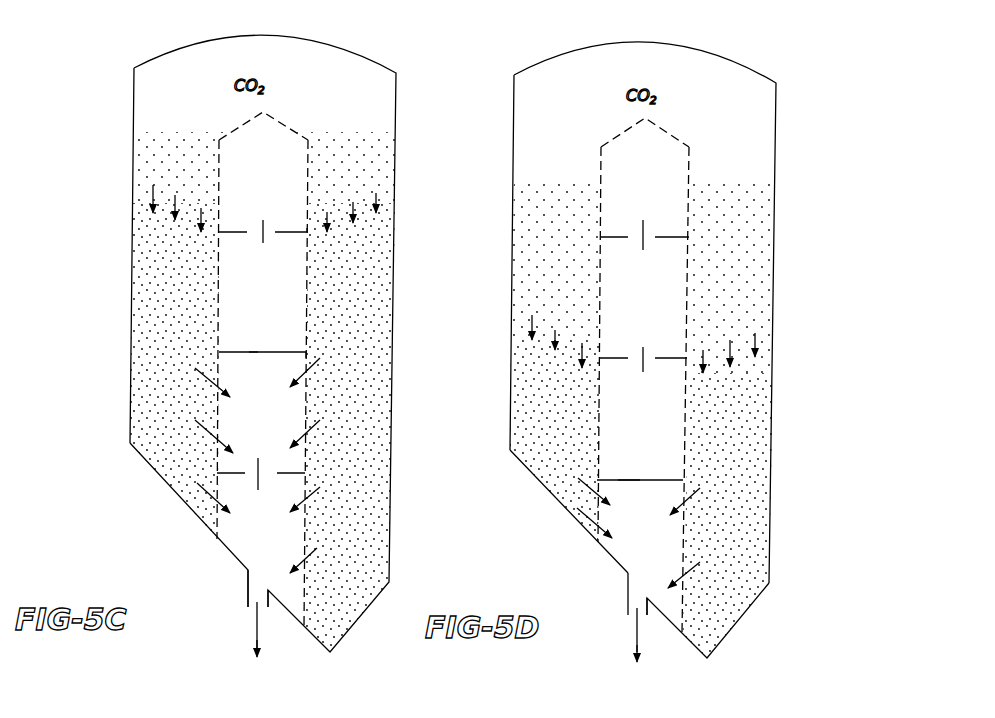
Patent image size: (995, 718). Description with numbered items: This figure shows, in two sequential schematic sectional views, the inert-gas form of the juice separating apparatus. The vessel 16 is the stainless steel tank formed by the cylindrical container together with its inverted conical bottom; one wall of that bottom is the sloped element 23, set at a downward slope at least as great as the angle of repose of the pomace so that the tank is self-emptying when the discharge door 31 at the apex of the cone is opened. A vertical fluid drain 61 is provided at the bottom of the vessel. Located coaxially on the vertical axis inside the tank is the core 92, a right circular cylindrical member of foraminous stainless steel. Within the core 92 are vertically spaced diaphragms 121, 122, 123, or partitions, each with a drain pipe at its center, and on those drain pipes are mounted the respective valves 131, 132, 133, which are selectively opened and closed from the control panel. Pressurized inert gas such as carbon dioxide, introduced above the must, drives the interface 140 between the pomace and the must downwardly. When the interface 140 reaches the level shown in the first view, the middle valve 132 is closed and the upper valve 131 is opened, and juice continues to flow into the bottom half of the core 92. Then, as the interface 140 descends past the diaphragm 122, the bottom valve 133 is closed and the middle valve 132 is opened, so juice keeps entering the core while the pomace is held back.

In FIG. 5C, the vessel 16 is at (398, 287).
In FIG. 5D, the vessel 16 is at (779, 248).
In FIG. 5C, the element 23 is at (187, 502).
In FIG. 5D, the discharge door 31 is at (741, 627).
In FIG. 5C, the vertical fluid drain 61 is at (248, 592).
In FIG. 5D, the vertical fluid drain 61 is at (627, 600).
In FIG. 5C, the core 92 is at (221, 290).
In FIG. 5D, the core 92 is at (692, 163).
In FIG. 5C, the diaphragm 121 is at (232, 233).
In FIG. 5D, the diaphragm 121 is at (607, 236).
In FIG. 5C, the diaphragm 122 is at (232, 353).
In FIG. 5D, the diaphragm 122 is at (608, 357).
In FIG. 5C, the diaphragm 123 is at (230, 475).
In FIG. 5D, the diaphragm 123 is at (607, 478).
In FIG. 5C, the upper valve 131 is at (263, 219).
In FIG. 5D, the upper valve 131 is at (647, 236).
In FIG. 5C, the middle valve 132 is at (253, 351).
In FIG. 5D, the middle valve 132 is at (647, 357).
In FIG. 5C, the bottom valve 133 is at (258, 457).
In FIG. 5D, the bottom valve 133 is at (628, 479).
In FIG. 5C, the interface 140 is at (365, 220).
In FIG. 5D, the interface 140 is at (742, 353).